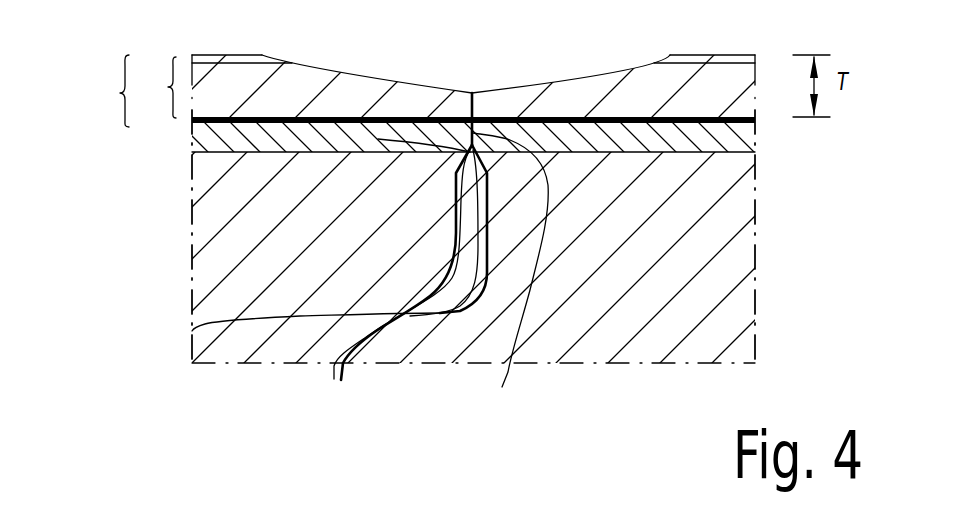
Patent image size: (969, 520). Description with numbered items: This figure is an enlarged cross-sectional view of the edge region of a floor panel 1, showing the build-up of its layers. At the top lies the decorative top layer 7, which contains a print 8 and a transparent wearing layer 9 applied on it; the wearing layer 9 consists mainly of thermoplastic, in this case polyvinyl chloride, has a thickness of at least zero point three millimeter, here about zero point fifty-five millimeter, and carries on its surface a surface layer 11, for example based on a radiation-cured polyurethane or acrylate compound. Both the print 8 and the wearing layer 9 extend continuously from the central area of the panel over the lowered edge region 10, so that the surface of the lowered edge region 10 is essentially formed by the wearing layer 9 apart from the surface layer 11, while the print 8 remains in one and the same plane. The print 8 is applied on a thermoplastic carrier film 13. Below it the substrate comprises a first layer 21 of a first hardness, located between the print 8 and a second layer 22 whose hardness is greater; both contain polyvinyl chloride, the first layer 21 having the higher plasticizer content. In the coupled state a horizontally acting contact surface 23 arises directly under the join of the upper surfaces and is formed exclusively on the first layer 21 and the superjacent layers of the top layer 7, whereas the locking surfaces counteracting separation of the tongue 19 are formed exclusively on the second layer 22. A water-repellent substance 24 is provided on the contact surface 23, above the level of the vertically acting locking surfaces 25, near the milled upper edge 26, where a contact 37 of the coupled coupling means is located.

The panel 1 is at (205, 267).
The decorative top layer 7 is at (120, 93).
The print 8 is at (247, 125).
The wearing layer 9 is at (168, 87).
The lowered edge region 10 is at (642, 30).
The surface layer 11 is at (237, 60).
The thermoplastic carrier film 13 is at (204, 124).
The tongue 19 is at (557, 357).
The first layer 21 is at (727, 138).
The second layer 22 is at (272, 263).
The horizontally acting contact surface 23 is at (510, 273).
The water-repellent substance 24 is at (397, 279).
The vertically acting locking surfaces 25 is at (290, 318).
The upper edge 26 is at (472, 91).
The contact surface 37 is at (283, 97).